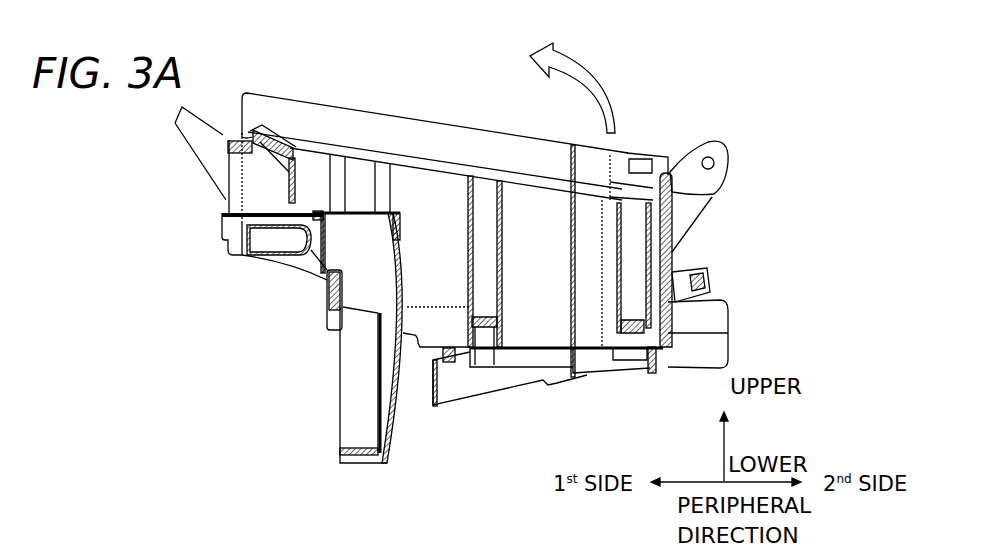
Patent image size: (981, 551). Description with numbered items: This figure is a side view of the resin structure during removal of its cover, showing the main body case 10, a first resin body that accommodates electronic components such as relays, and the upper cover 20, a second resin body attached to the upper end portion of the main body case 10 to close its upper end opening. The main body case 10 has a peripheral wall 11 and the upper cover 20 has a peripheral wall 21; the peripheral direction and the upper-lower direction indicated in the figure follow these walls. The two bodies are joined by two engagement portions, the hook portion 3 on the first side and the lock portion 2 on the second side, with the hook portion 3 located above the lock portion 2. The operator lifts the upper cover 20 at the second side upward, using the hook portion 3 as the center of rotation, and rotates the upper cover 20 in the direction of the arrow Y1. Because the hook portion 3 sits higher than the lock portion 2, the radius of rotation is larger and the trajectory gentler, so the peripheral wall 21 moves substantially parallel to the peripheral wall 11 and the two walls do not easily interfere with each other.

The lock portion 2 is at (728, 192).
The hook portion 3 is at (228, 140).
The main body case 10 is at (672, 256).
The peripheral wall 11 is at (536, 320).
The upper cover 20 is at (652, 153).
The peripheral wall 21 is at (324, 121).
The arrow Y1 is at (577, 88).